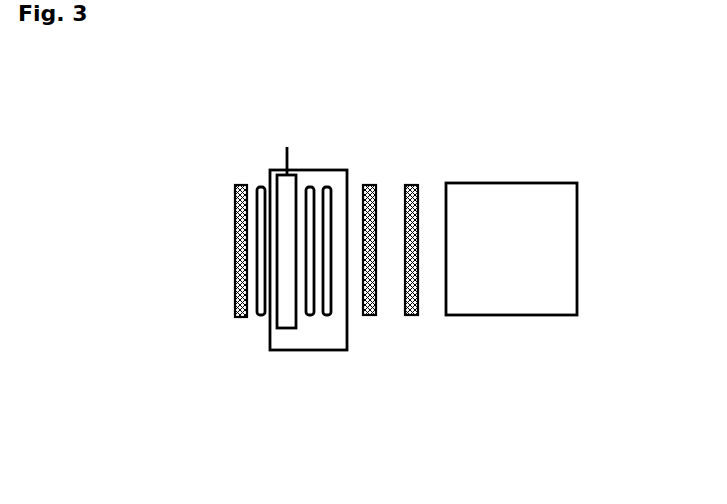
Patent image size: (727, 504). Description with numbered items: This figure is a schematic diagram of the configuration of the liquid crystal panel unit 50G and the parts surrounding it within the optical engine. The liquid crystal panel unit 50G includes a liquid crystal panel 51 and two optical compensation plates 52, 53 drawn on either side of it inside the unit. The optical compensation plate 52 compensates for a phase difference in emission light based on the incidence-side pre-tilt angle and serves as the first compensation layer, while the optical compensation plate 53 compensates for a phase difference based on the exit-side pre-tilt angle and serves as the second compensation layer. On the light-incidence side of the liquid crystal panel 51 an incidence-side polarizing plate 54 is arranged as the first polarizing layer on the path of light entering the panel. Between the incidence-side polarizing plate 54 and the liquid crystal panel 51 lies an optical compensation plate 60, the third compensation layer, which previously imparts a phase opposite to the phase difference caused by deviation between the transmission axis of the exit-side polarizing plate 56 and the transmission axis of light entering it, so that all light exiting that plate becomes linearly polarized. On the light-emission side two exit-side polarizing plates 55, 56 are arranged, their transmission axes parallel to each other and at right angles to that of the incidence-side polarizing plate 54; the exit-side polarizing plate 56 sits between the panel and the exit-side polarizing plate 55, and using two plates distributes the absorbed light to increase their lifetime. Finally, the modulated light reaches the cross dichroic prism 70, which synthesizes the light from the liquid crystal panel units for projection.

The liquid crystal panel unit 50G is at (328, 170).
The liquid crystal panel 51 is at (292, 328).
The optical compensation plate 52 is at (311, 316).
The optical compensation plate 53 is at (327, 316).
The incidence-side polarizing plate 54 is at (242, 318).
The exit-side polarizing plate 55 is at (412, 185).
The exit-side polarizing plate 56 is at (366, 185).
The optical compensation plate 60 is at (261, 187).
The cross dichroic prism 70 is at (577, 242).